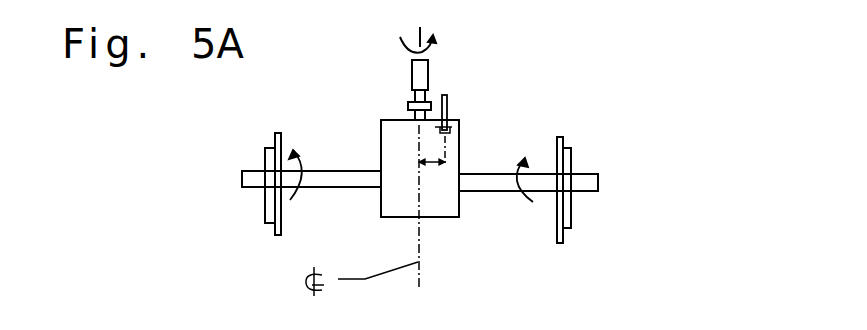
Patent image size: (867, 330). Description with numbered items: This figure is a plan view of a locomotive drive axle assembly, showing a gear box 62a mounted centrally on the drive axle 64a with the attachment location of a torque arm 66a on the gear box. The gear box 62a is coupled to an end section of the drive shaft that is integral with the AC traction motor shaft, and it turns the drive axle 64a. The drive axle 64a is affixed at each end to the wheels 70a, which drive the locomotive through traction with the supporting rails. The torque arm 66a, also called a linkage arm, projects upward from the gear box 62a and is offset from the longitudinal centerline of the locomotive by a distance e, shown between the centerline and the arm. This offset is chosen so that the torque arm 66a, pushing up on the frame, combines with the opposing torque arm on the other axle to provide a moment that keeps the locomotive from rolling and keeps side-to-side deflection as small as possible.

The gear box 62a is at (508, 186).
The torque arm 66a is at (448, 107).
The drive axle 64a is at (427, 237).
The wheels 70a is at (412, 195).